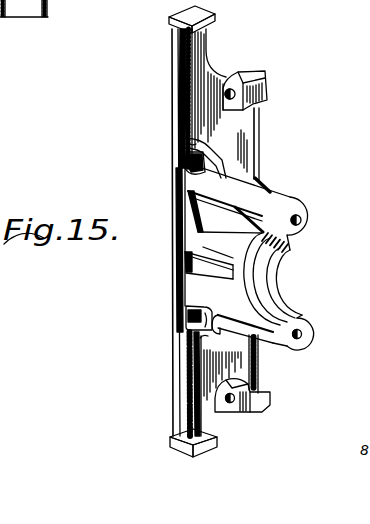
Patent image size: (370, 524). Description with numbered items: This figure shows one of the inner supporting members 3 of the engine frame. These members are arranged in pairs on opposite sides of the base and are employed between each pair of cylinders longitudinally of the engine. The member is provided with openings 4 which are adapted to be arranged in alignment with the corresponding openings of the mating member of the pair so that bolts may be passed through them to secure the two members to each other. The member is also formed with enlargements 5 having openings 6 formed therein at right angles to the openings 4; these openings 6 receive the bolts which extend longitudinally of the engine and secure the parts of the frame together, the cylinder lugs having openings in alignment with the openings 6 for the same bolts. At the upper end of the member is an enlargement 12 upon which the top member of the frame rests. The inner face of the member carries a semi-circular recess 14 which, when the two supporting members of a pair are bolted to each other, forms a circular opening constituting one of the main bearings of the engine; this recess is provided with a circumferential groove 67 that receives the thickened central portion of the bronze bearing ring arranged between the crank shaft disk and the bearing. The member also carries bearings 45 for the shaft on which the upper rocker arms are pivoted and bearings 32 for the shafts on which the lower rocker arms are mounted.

The enlargements 12 is at (215, 14).
The inner supporting member 3 is at (250, 160).
The bearings 45 is at (267, 78).
The bearings 32 is at (267, 407).
The openings 6 is at (183, 161).
The enlargements 5 is at (188, 143).
The semi-circular recess 14 is at (277, 282).
The circumferential groove 67 is at (283, 312).
The openings 4 is at (302, 221).